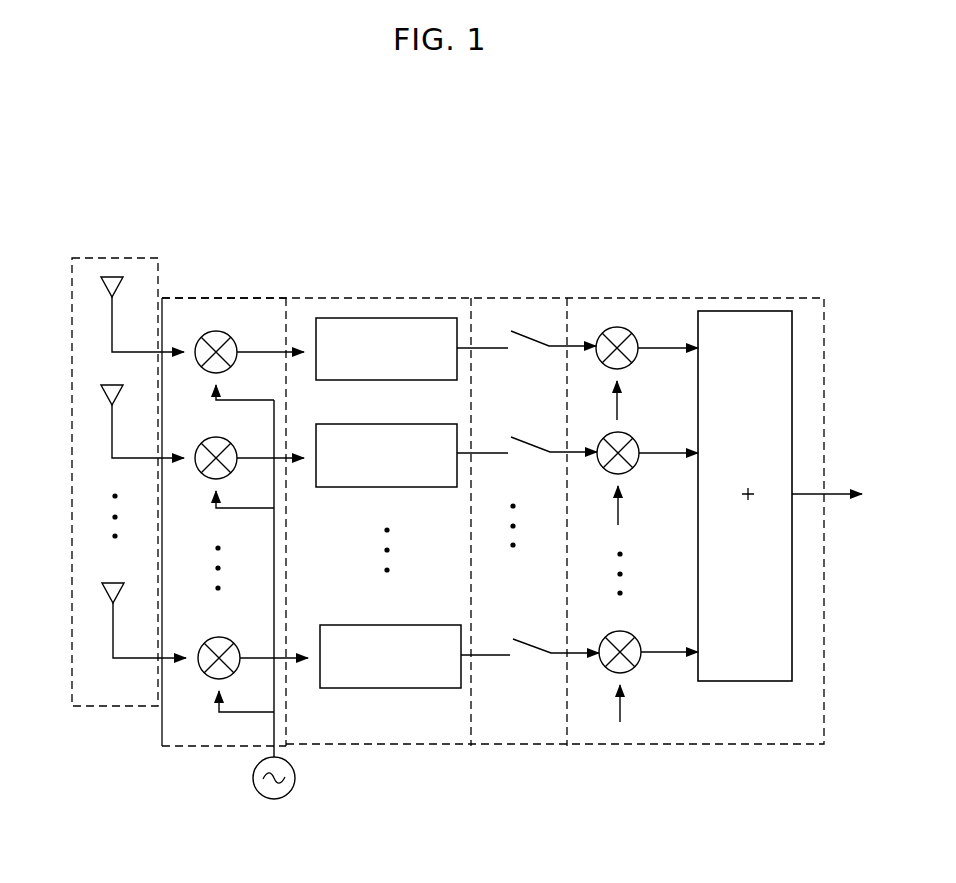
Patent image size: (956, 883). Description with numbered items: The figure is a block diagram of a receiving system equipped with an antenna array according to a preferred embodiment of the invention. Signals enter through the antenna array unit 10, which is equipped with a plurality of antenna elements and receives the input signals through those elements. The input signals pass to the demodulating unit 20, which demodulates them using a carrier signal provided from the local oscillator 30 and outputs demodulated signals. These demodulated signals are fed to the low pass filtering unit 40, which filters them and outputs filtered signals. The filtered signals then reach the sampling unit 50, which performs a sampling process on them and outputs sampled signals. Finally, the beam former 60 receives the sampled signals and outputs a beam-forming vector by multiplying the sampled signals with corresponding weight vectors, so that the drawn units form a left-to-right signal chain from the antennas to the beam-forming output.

The antenna array unit 10 is at (120, 258).
The demodulating unit 20 is at (238, 298).
The local oscillator 30 is at (274, 799).
The low pass filtering unit 40 is at (424, 298).
The sampling unit 50 is at (520, 298).
The beam former 60 is at (776, 298).